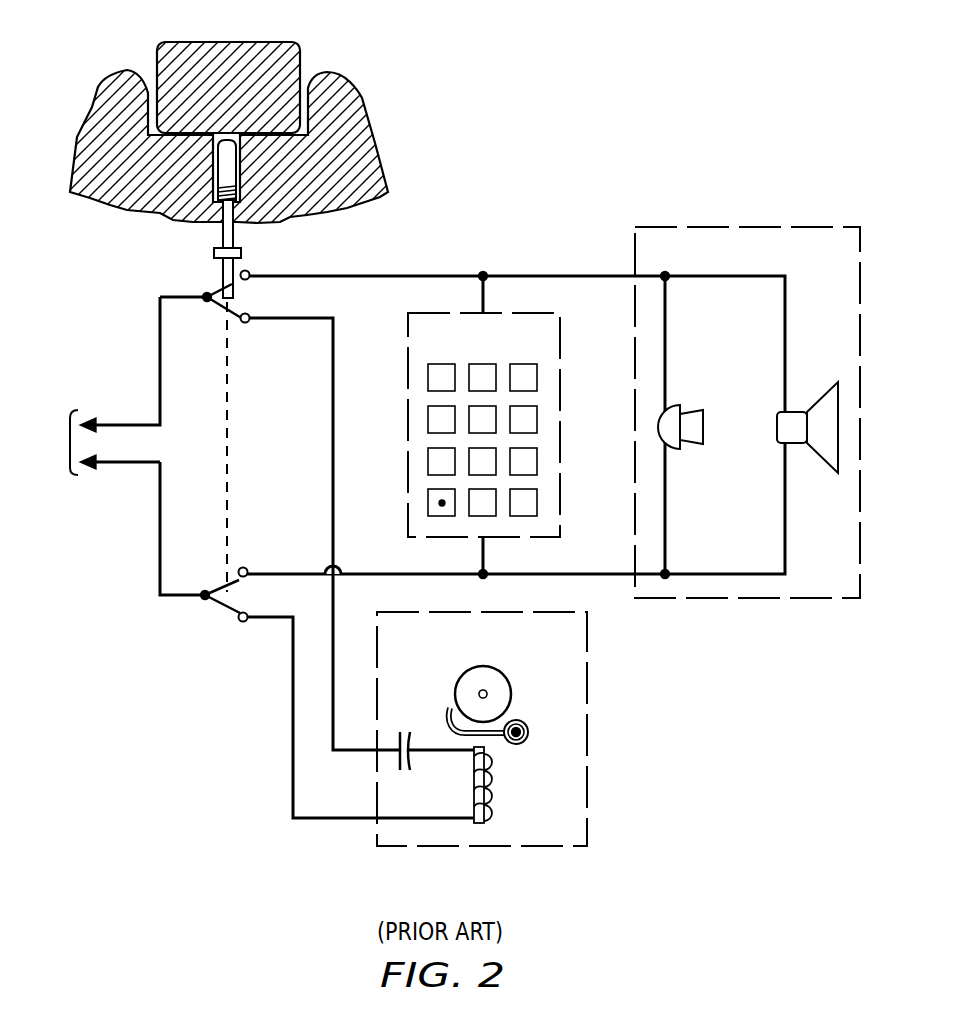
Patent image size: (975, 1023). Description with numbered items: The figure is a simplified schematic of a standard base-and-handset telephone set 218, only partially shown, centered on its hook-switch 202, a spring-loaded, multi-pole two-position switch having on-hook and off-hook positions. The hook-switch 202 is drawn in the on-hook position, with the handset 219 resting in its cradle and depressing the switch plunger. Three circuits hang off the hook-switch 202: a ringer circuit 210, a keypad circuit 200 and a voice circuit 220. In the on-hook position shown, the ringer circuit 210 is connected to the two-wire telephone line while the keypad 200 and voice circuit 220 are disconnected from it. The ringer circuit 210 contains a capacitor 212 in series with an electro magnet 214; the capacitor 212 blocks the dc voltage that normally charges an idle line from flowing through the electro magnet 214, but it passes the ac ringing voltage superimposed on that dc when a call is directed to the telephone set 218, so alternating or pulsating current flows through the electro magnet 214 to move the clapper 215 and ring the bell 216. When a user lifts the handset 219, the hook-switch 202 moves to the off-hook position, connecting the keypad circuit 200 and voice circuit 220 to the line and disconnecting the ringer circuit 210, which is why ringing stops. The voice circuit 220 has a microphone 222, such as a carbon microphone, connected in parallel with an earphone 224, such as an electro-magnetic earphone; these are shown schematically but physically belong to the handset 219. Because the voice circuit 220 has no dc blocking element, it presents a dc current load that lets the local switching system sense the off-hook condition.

The telephone set 218 is at (584, 146).
The handset 219 is at (300, 44).
The hook-switch 202 is at (249, 297).
The keypad circuit 200 is at (522, 291).
The voice circuit 220 is at (810, 227).
The microphone 222 is at (682, 404).
The earphone 224 is at (818, 396).
The ringer circuit 210 is at (535, 612).
The bell 216 is at (511, 690).
The clapper 215 is at (453, 714).
The capacitor 212 is at (405, 771).
The electro magnet 214 is at (490, 787).